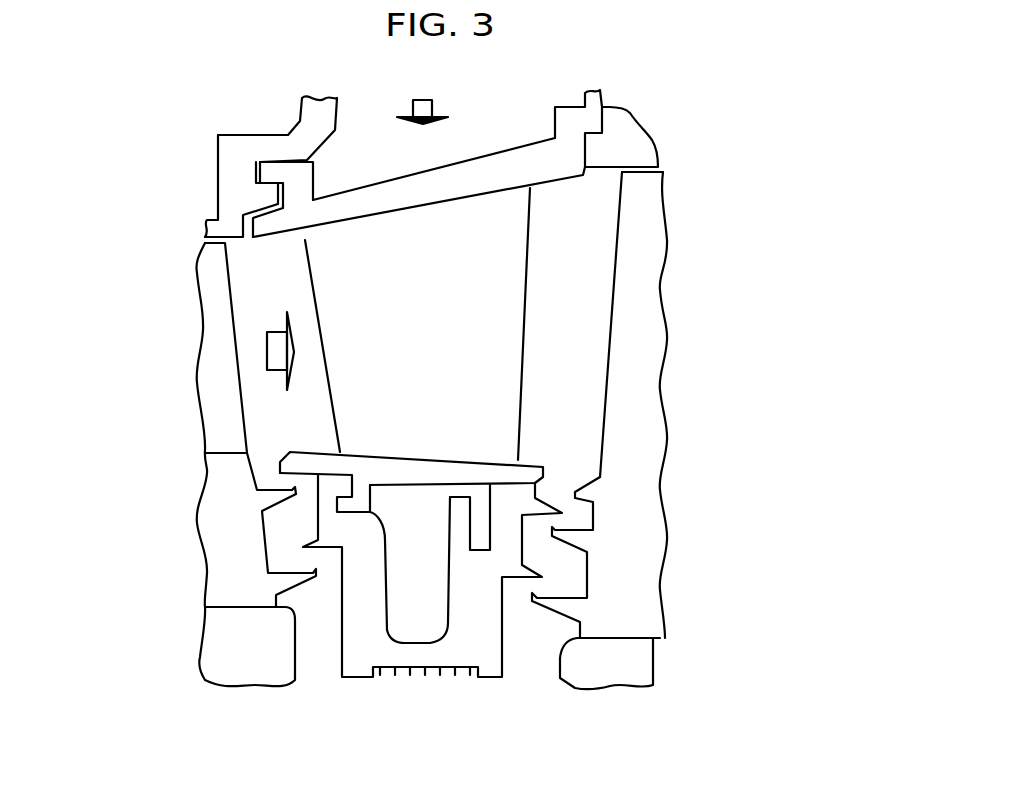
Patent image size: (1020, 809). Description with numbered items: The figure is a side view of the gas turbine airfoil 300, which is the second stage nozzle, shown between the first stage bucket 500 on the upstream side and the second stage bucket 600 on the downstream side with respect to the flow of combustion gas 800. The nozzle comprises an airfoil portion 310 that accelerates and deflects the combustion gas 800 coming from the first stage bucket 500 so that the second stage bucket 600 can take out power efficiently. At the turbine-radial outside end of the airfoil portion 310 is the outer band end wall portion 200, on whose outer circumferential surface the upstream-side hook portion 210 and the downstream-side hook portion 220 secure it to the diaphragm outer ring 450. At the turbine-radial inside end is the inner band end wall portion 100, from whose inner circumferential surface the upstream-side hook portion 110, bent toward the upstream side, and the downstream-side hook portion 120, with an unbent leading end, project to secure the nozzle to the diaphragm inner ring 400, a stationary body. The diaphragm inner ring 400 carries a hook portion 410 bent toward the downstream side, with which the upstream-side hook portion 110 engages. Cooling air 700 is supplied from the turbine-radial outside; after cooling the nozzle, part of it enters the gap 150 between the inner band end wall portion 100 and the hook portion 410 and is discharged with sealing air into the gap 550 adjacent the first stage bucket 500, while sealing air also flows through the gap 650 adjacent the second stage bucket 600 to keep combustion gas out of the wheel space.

The inner band end wall portion 100 is at (508, 472).
The upstream-side hook portion 110 is at (367, 497).
The downstream-side hook portion 120 is at (480, 518).
The gap 150 is at (315, 481).
The outer band end wall portion 200 is at (537, 170).
The upstream-side hook portion 210 is at (278, 172).
The downstream-side hook portion 220 is at (592, 120).
The gas turbine airfoil 300 is at (532, 390).
The airfoil portion 310 is at (525, 337).
The diaphragm inner ring 400 is at (343, 585).
The hook portion 410 is at (328, 488).
The diaphragm outer ring 450 is at (263, 138).
The first stage bucket 500 is at (210, 318).
The gap 550 is at (320, 655).
The second stage bucket 600 is at (655, 327).
The gap 650 is at (538, 655).
The cooling air 700 is at (433, 107).
The combustion gas 800 is at (287, 330).